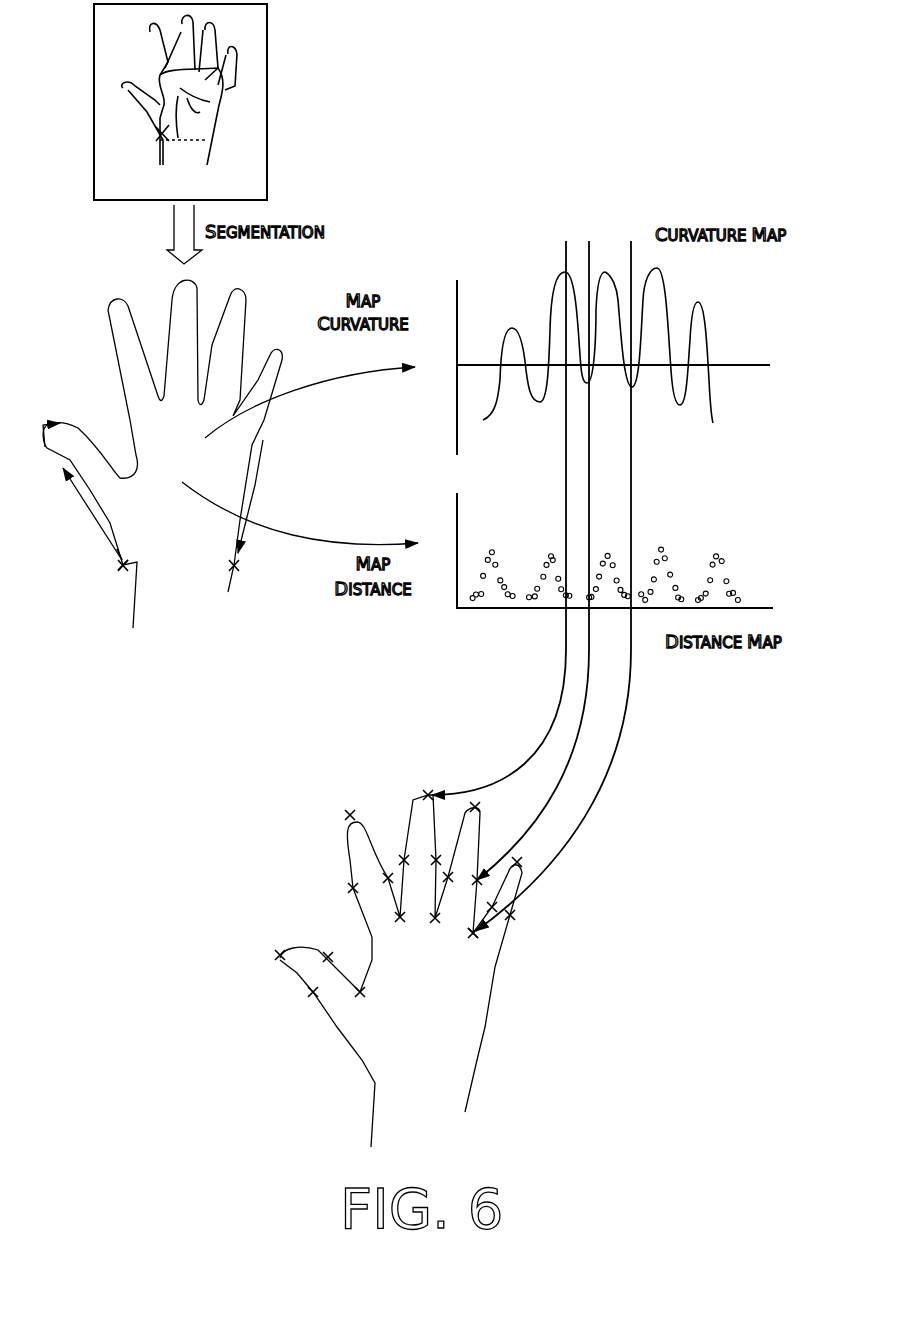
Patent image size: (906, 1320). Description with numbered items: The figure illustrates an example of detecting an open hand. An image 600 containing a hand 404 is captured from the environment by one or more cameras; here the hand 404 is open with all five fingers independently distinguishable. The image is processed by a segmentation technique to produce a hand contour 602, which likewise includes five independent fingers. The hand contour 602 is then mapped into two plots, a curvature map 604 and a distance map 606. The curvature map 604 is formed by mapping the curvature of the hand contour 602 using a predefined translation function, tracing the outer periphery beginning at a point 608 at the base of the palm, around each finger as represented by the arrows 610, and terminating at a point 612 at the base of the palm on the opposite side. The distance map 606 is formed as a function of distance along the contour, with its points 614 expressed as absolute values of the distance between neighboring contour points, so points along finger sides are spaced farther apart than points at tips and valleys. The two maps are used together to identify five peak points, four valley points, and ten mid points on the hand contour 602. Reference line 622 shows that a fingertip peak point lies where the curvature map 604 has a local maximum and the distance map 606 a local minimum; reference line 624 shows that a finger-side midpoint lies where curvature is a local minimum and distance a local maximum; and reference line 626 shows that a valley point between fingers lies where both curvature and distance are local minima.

The hand 404 is at (157, 135).
The image 600 is at (268, 100).
The hand contour 602 is at (113, 303).
The curvature map 604 is at (690, 287).
The distance map 606 is at (615, 545).
The point at the base of the palm 608 is at (118, 565).
The arrows 610 is at (55, 423).
The point at the base of the palm on the opposite side 612 is at (238, 570).
The points in the distance map 614 is at (678, 575).
The reference line 622 is at (547, 703).
The reference line 624 is at (558, 748).
The reference line 626 is at (603, 763).